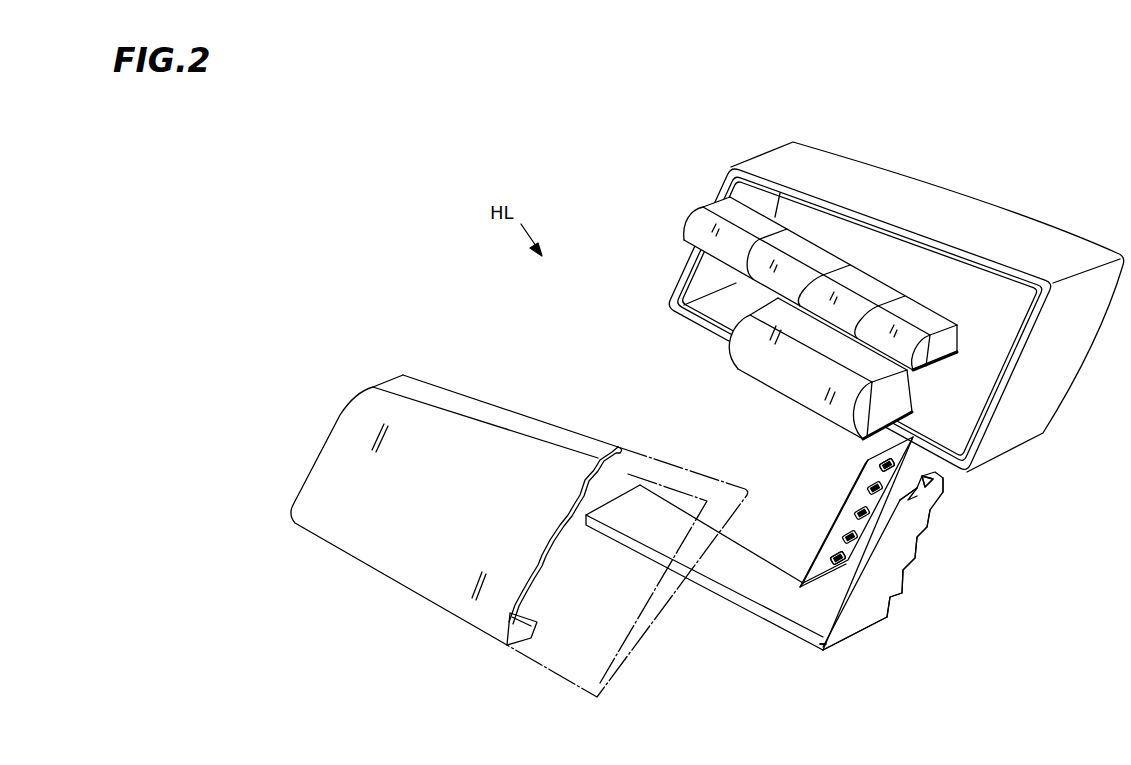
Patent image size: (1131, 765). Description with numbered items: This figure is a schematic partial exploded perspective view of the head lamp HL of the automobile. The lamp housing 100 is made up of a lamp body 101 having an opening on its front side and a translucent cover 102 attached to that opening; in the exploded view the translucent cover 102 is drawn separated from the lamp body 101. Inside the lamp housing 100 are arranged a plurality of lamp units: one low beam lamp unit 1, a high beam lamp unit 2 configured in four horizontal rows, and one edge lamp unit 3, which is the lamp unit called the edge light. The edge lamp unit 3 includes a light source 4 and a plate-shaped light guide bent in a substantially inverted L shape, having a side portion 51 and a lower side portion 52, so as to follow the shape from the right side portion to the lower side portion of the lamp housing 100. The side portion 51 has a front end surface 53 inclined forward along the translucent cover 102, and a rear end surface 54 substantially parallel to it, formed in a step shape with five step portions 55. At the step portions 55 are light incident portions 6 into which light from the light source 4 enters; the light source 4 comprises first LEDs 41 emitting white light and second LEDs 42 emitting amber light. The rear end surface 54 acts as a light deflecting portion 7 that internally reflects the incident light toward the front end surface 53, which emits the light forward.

The lamp housing 100 is at (769, 143).
The lamp body 101 is at (926, 184).
The translucent cover 102 is at (425, 392).
The low beam lamp unit 1 is at (727, 352).
The high beam lamp unit 2 is at (702, 207).
The edge lamp unit 3 is at (963, 575).
The light source 4 is at (870, 452).
The first LED 41 is at (866, 490).
The second LED 42 is at (862, 511).
The side portion 51 is at (875, 603).
The lower side portion 52 is at (752, 598).
The front end surface 53 is at (822, 652).
The rear end surface 54 is at (925, 477).
The step portions 55 is at (913, 565).
The light incident portion 6 is at (915, 508).
The light deflecting portion 7 is at (927, 481).